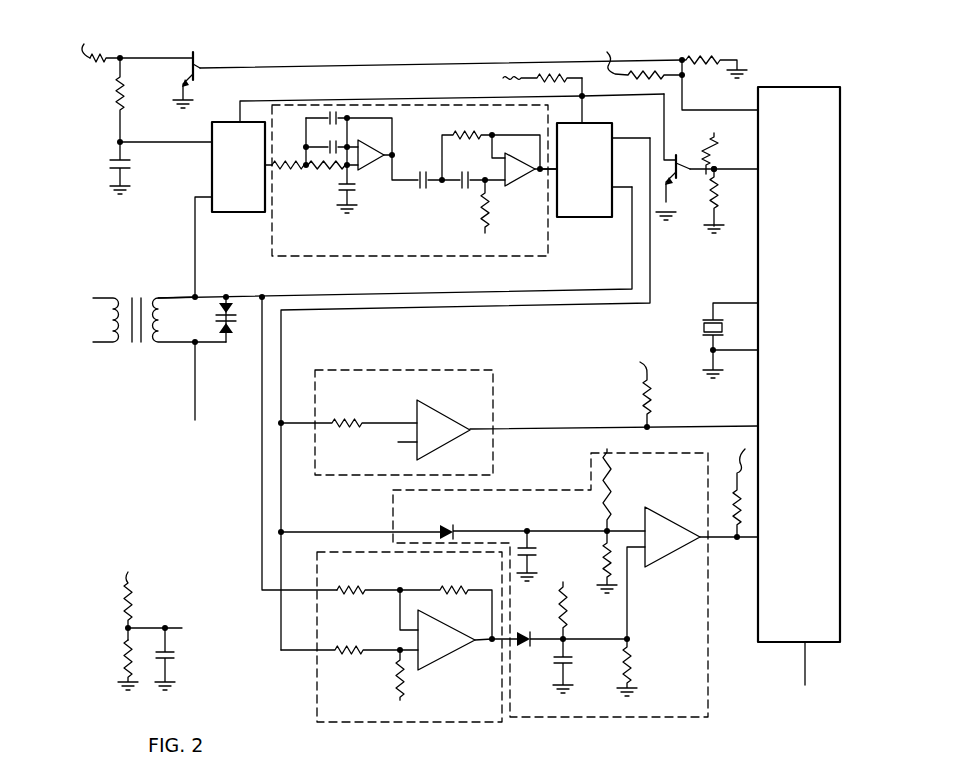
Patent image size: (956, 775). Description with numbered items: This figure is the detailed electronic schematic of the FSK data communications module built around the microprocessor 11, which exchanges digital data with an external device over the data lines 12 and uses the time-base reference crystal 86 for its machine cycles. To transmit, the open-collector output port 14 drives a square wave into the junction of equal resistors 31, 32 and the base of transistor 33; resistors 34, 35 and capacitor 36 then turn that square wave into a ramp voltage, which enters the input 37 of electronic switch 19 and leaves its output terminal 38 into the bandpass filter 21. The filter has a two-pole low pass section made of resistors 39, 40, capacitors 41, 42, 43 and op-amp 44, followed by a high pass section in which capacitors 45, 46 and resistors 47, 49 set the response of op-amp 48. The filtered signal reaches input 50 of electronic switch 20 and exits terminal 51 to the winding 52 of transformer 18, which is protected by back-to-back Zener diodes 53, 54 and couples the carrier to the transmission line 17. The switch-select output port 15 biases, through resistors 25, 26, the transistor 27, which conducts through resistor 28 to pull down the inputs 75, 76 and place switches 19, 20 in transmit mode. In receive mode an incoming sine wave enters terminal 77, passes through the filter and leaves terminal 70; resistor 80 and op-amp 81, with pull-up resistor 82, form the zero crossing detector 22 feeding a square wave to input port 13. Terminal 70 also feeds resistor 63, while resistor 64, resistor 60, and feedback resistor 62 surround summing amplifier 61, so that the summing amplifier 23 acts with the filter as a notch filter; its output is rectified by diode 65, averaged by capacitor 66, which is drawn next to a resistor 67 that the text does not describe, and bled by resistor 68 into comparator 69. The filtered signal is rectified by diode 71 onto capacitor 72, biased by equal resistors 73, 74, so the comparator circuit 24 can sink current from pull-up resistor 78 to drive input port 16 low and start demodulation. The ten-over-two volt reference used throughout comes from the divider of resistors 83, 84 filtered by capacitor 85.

The microprocessor 11 is at (806, 404).
The data lines 12 is at (804, 643).
The input port 13 is at (757, 424).
The output port 14 is at (755, 109).
The output port 15 is at (757, 167).
The input port 16 is at (757, 542).
The transmission line 17 is at (109, 312).
The transformer 18 is at (136, 296).
The electronic switch 19 is at (238, 178).
The electronic switch 20 is at (604, 175).
The bandpass filter 21 is at (360, 257).
The zero crossing detector 22 is at (407, 368).
The summing amplifier 23 is at (316, 680).
The comparator circuit 24 is at (591, 457).
The resistor 25 is at (712, 151).
The resistor 26 is at (719, 195).
The transistor 27 is at (680, 178).
The resistor 28 is at (571, 77).
The resistor 31 is at (709, 56).
The resistor 32 is at (632, 76).
The transistor 33 is at (193, 55).
The resistor 34 is at (134, 61).
The resistor 35 is at (111, 108).
The capacitor 36 is at (110, 166).
The input 37 is at (208, 138).
The output terminal 38 is at (263, 158).
The resistor 39 is at (284, 172).
The resistor 40 is at (326, 166).
The capacitor 41 is at (332, 104).
The capacitor 42 is at (330, 139).
The capacitor 43 is at (352, 188).
The operational amplifier 44 is at (373, 142).
The capacitor 45 is at (422, 173).
The capacitor 46 is at (465, 173).
The resistor 47 is at (490, 210).
The operational amplifier 48 is at (531, 159).
The resistor 49 is at (467, 134).
The input 50 is at (552, 172).
The terminal 51 is at (615, 187).
The winding 52 is at (163, 320).
The Zener diode 53 is at (237, 310).
The Zener diode 54 is at (234, 338).
The resistor 60 is at (361, 587).
The summing amplifier 61 is at (451, 634).
The feedback resistor 62 is at (462, 585).
The resistor 63 is at (351, 653).
The resistor 64 is at (404, 682).
The diode 65 is at (510, 640).
The capacitor 66 is at (556, 660).
The resistor 67 is at (561, 612).
The resistor 68 is at (633, 654).
The comparator 69 is at (661, 557).
The terminal 70 is at (614, 138).
The diode 71 is at (441, 529).
The capacitor 72 is at (536, 551).
The resistor 73 is at (611, 482).
The resistor 74 is at (610, 538).
The input 75 is at (239, 119).
The input 76 is at (586, 123).
The terminal 77 is at (211, 196).
The pull-up resistor 78 is at (734, 502).
The resistor 80 is at (362, 418).
The operational amplifier 81 is at (442, 413).
The resistor 82 is at (640, 404).
The resistor 83 is at (132, 607).
The resistor 84 is at (124, 655).
The capacitor 85 is at (175, 655).
The time-base reference crystal 86 is at (700, 327).